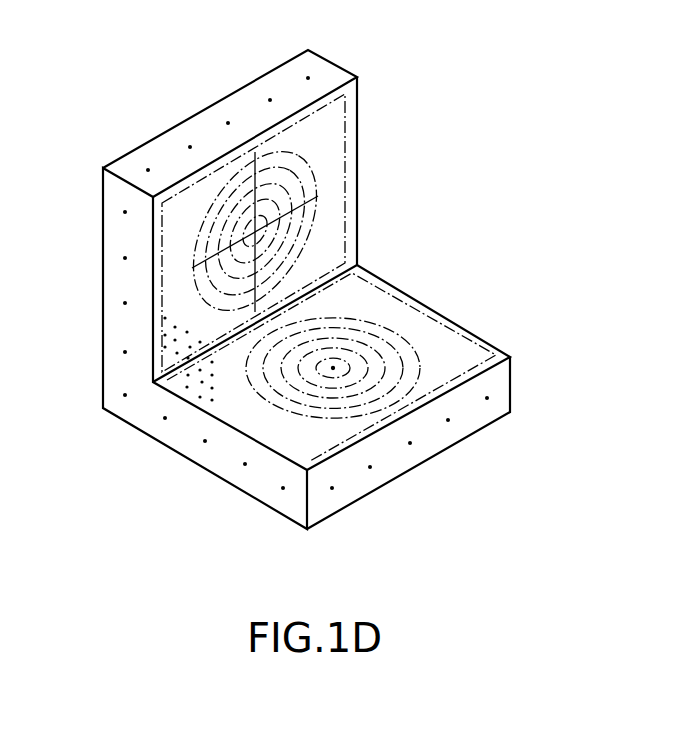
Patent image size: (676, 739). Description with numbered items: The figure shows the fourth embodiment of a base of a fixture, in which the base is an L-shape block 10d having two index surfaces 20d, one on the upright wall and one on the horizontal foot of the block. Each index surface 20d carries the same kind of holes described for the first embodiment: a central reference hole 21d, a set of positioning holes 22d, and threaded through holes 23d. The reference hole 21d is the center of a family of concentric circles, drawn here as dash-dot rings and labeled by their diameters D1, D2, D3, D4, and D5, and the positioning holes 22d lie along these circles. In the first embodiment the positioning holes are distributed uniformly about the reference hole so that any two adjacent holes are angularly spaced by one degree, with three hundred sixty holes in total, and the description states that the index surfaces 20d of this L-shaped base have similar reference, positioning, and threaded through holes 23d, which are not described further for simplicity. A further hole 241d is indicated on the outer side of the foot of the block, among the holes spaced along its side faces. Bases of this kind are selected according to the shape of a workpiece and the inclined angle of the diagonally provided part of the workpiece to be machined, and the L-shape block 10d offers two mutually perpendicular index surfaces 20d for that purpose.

The L-shape block 10d is at (340, 53).
The index surface 20d is at (355, 118).
The reference hole 21d is at (318, 198).
The positioning holes 22d is at (316, 180).
The threaded through holes 23d is at (163, 350).
The mounting hole 241d is at (206, 444).
The diameter D1 is at (333, 370).
The diameter D2 is at (347, 376).
The diameter D3 is at (362, 381).
The diameter D4 is at (378, 385).
The diameter D5 is at (416, 380).